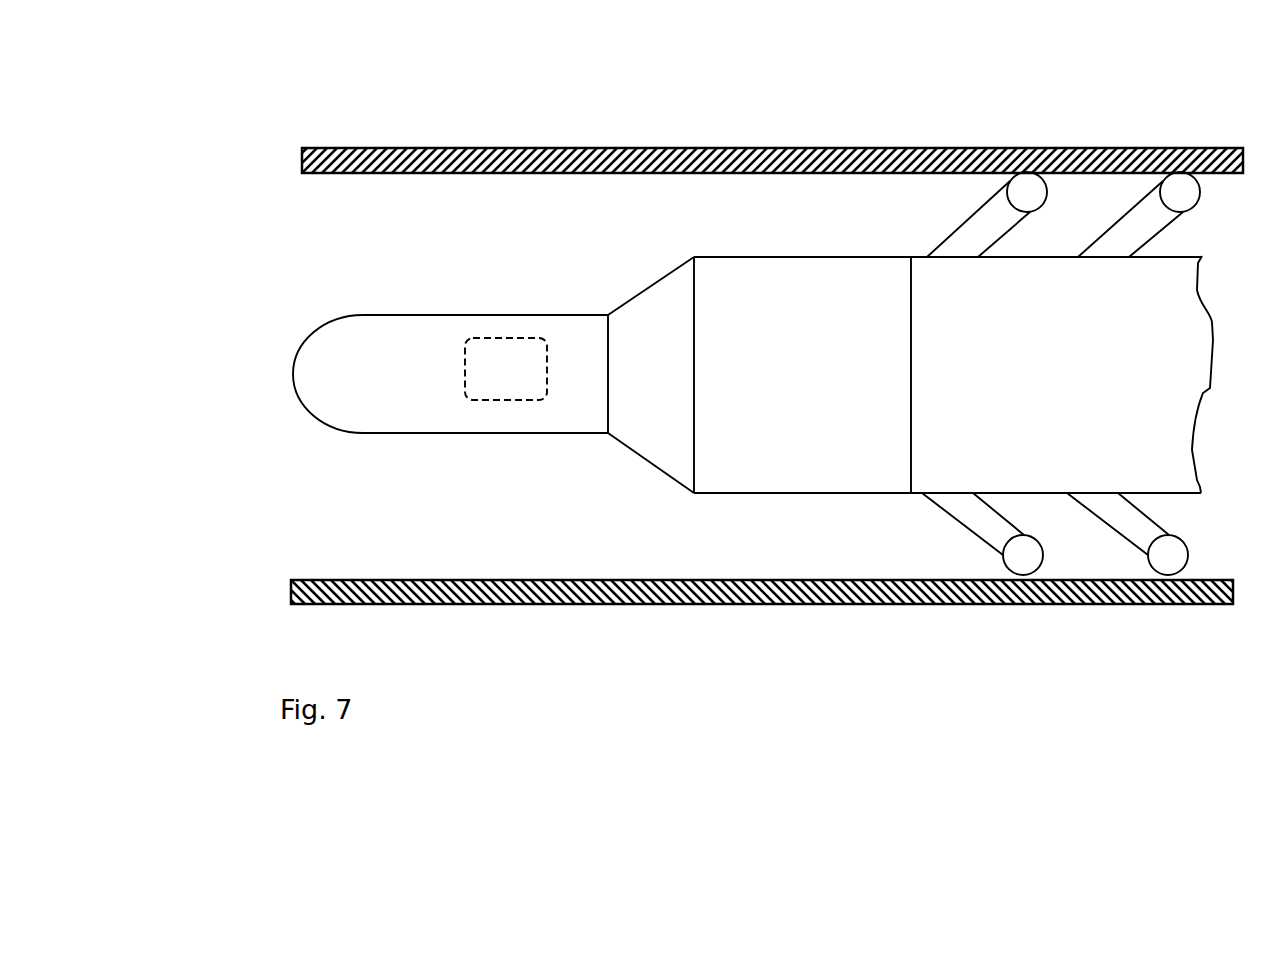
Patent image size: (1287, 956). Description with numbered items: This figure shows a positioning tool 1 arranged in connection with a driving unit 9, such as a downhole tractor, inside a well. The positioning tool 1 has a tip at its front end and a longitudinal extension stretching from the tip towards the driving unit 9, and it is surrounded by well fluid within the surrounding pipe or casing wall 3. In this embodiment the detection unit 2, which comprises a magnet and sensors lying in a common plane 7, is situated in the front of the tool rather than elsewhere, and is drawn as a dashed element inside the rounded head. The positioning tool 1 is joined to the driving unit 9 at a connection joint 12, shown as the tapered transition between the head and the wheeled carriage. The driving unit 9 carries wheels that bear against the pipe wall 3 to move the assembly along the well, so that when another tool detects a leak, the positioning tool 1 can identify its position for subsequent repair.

The positioning tool 1 is at (443, 221).
The detection unit 2 is at (497, 382).
The pipe wall 3 is at (1155, 160).
The plane 7 is at (294, 372).
The driving unit 9 is at (1050, 452).
The connection joint 12 is at (642, 383).